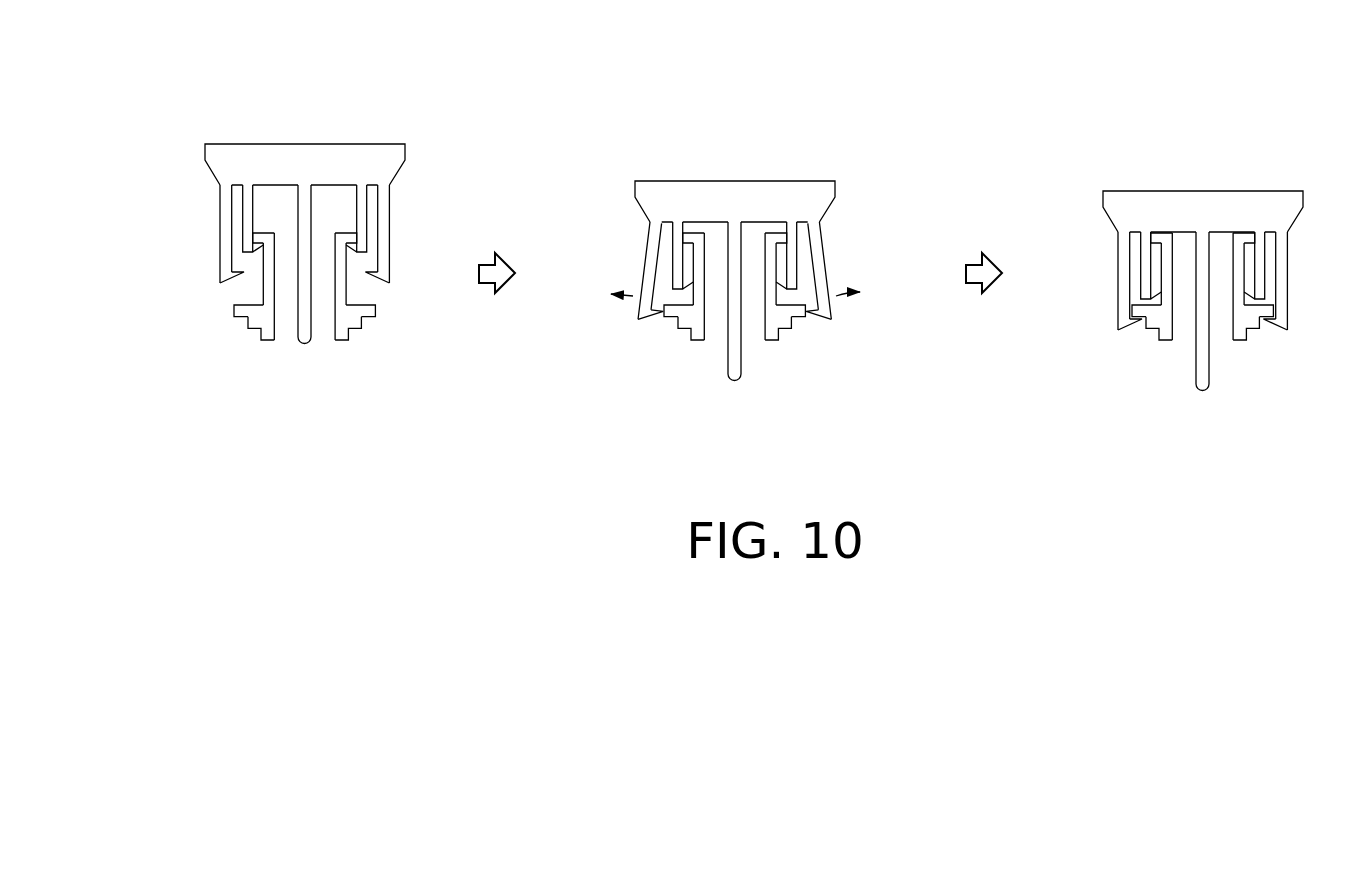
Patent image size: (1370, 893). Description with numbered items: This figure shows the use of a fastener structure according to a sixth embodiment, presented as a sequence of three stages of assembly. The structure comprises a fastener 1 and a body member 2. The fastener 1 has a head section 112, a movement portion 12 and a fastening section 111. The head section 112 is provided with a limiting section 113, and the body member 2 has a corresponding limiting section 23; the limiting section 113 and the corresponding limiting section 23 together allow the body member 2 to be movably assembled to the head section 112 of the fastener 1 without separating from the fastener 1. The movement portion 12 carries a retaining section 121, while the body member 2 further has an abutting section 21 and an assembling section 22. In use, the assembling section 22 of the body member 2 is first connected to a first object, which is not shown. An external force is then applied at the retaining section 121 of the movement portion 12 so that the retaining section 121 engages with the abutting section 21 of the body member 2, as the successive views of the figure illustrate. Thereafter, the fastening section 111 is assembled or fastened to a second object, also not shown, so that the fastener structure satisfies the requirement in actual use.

The fastener 1 is at (749, 248).
The fastening section 111 is at (311, 341).
The head section 112 is at (268, 148).
The limiting section 113 is at (362, 213).
The movement portion 12 is at (715, 273).
The retaining section 121 is at (229, 277).
The body member 2 is at (746, 259).
The abutting section 21 is at (236, 312).
The assembling section 22 is at (346, 334).
The corresponding limiting section 23 is at (350, 236).